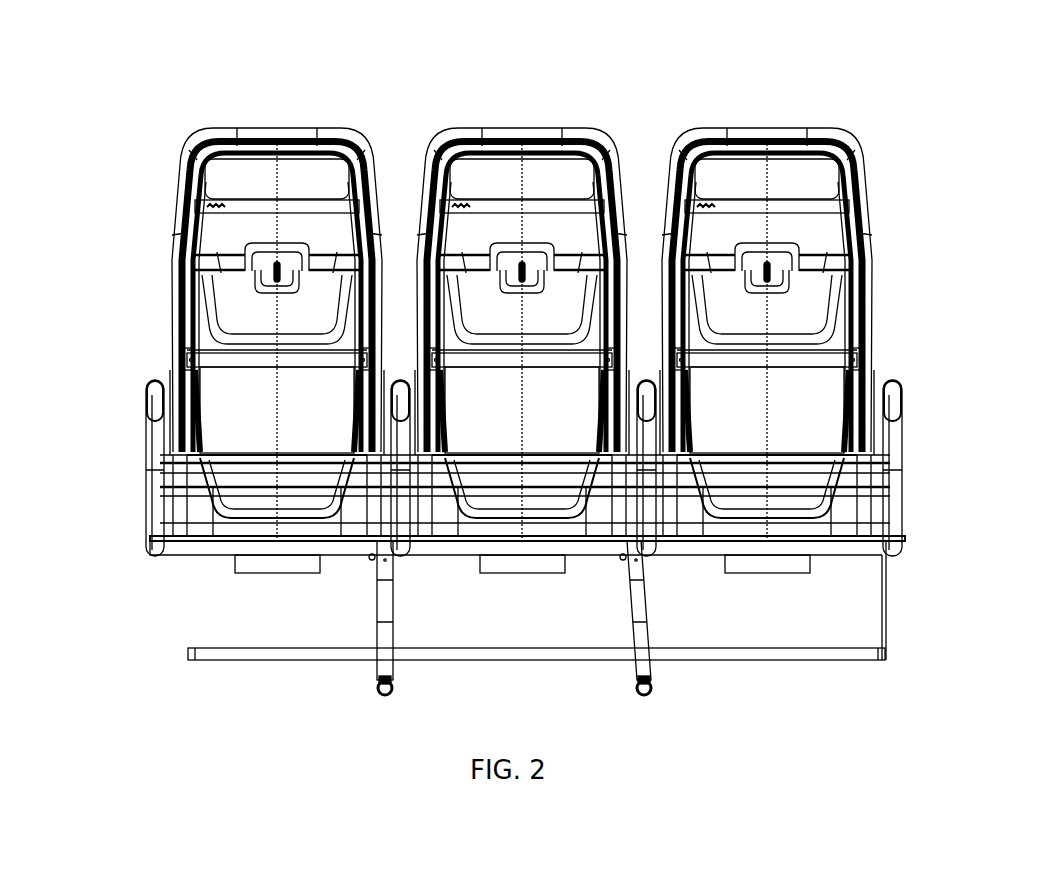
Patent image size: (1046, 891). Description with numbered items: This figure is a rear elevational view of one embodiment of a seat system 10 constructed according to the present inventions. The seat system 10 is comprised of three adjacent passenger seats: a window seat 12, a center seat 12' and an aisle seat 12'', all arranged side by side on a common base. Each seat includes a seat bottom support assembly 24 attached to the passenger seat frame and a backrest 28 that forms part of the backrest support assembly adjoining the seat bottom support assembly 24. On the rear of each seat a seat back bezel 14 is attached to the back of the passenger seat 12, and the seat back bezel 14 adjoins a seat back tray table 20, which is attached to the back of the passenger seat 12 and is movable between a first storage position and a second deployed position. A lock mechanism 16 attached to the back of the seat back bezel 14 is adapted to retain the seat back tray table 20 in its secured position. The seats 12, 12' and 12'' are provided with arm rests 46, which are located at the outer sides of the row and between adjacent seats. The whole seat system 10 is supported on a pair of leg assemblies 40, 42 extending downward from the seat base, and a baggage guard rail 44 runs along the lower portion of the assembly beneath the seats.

The seat system 10 is at (160, 89).
The passenger seat 12 is at (232, 314).
The center seat 12' is at (522, 309).
The aisle seat 12'' is at (767, 308).
The seat back bezel 14 is at (231, 334).
The lock mechanism 16 is at (220, 299).
The seat back tray table 20 is at (216, 335).
The seat bottom support assembly 24 is at (230, 519).
The backrest 28 is at (232, 430).
The leg assembly 40 is at (642, 623).
The leg assembly 42 is at (378, 623).
The baggage guard rail 44 is at (188, 658).
The arm rest 46 is at (142, 392).